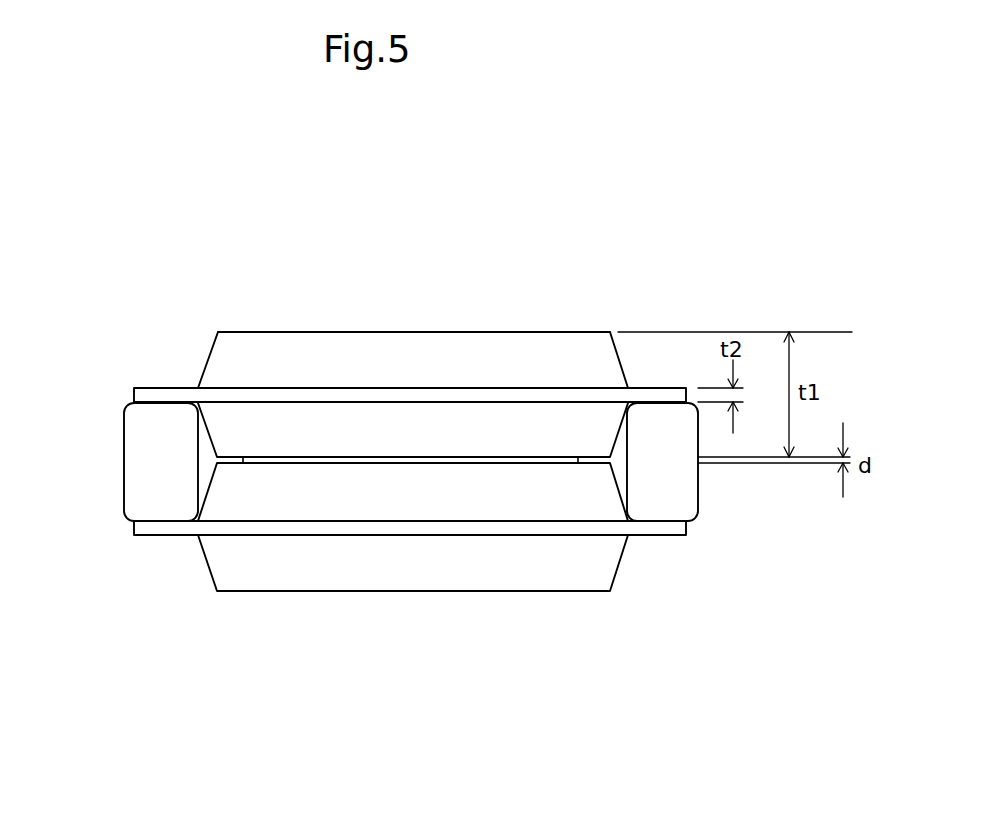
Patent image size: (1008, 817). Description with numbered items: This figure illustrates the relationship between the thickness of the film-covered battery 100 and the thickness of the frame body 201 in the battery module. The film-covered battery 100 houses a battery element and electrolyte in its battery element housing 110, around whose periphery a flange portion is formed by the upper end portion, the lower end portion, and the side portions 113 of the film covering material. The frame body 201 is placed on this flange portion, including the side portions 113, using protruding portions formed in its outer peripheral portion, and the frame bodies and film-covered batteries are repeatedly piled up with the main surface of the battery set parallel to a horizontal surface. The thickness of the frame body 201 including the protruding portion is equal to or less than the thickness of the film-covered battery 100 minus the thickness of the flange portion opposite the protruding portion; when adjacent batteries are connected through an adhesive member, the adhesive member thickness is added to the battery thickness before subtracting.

The film-covered battery 100 is at (340, 318).
The battery element housing 110 is at (436, 332).
The side portion 113 is at (655, 402).
The frame body 201 is at (140, 427).